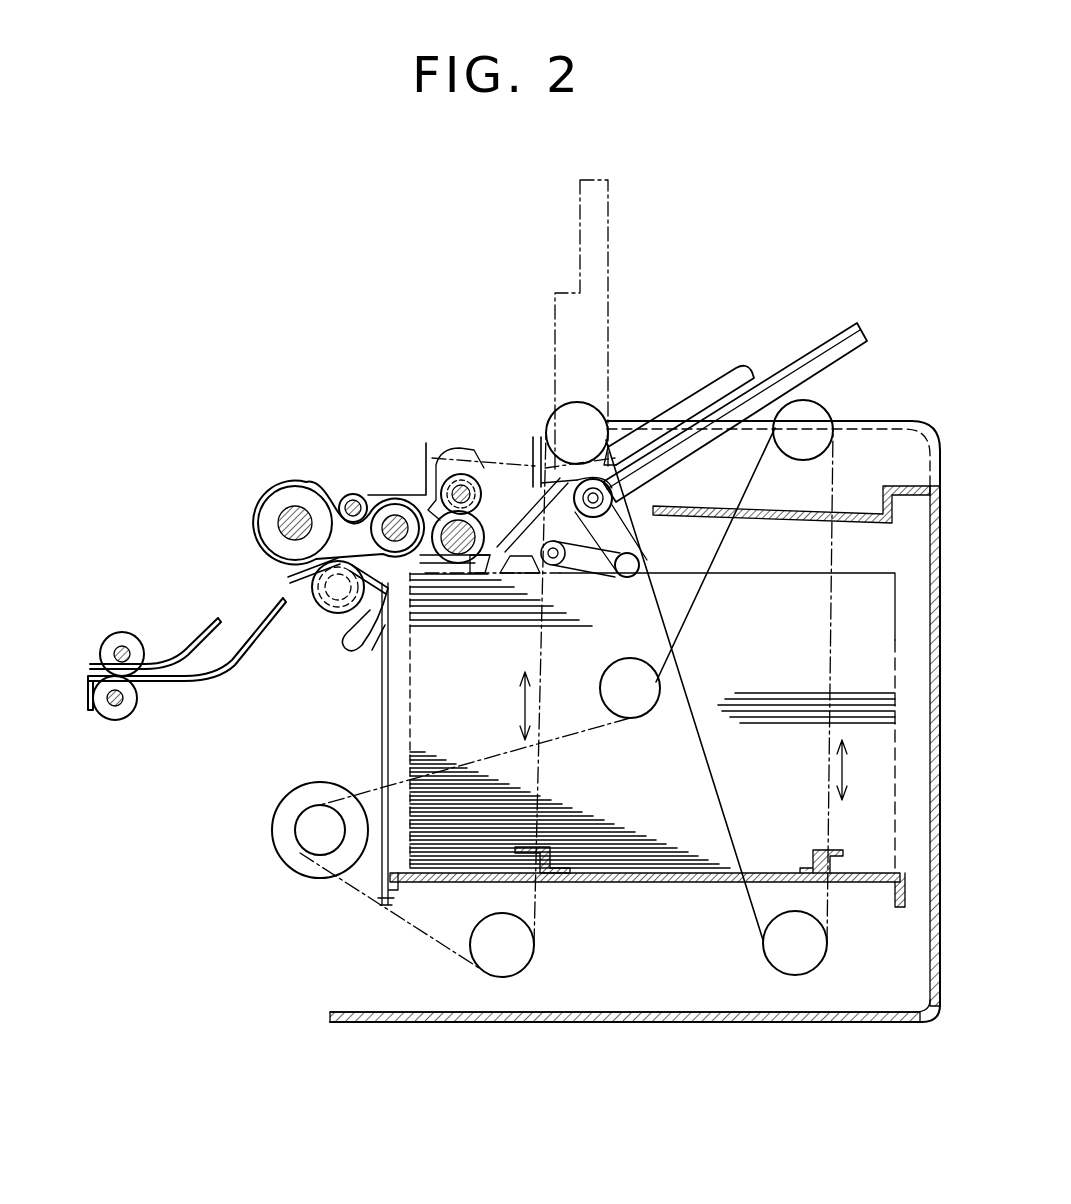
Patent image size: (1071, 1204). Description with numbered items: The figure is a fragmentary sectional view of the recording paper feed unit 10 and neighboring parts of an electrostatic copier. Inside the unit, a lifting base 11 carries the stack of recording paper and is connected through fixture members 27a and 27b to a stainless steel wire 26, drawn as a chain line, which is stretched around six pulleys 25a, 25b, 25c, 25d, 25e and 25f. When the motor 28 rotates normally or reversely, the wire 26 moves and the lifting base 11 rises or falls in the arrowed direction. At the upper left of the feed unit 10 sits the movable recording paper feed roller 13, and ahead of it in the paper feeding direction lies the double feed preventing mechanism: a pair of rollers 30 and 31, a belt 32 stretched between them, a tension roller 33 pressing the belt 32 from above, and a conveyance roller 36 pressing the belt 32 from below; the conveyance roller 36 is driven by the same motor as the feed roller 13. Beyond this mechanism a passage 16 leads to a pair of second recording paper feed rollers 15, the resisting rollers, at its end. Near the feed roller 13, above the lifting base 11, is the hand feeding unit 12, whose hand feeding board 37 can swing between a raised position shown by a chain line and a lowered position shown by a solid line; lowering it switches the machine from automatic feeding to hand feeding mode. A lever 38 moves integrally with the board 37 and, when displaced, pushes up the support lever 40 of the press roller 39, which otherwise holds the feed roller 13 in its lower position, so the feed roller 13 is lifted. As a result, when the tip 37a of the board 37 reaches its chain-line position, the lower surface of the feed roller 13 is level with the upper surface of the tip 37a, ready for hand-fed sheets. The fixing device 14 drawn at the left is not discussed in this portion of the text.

The recording paper feed unit 10 is at (882, 406).
The lifting base 11 is at (641, 765).
The hand feeding unit 12 is at (580, 245).
The recording paper feed roller 13 is at (365, 660).
The fixing device 14 is at (292, 481).
The second recording paper feed rollers 15 is at (122, 632).
The passage 16 is at (195, 675).
The pulley 25a is at (806, 947).
The pulley 25b is at (798, 443).
The pulley 25c is at (578, 412).
The pulley 25d is at (632, 678).
The pulley 25e is at (513, 955).
The pulley 25f is at (304, 835).
The stainless steel wire 26 is at (560, 740).
The fixture member 27a is at (555, 885).
The fixture member 27b is at (808, 860).
The motor 28 is at (318, 782).
The roller 30 is at (292, 505).
The roller 31 is at (393, 503).
The belt 32 is at (322, 482).
The tension roller 33 is at (352, 497).
The conveyance roller 36 is at (322, 608).
The hand feeding board 37 is at (702, 403).
The tip of the hand feeding board 37a is at (512, 578).
The lever 38 is at (553, 418).
The press roller 39 is at (452, 474).
The support lever 40 is at (500, 495).